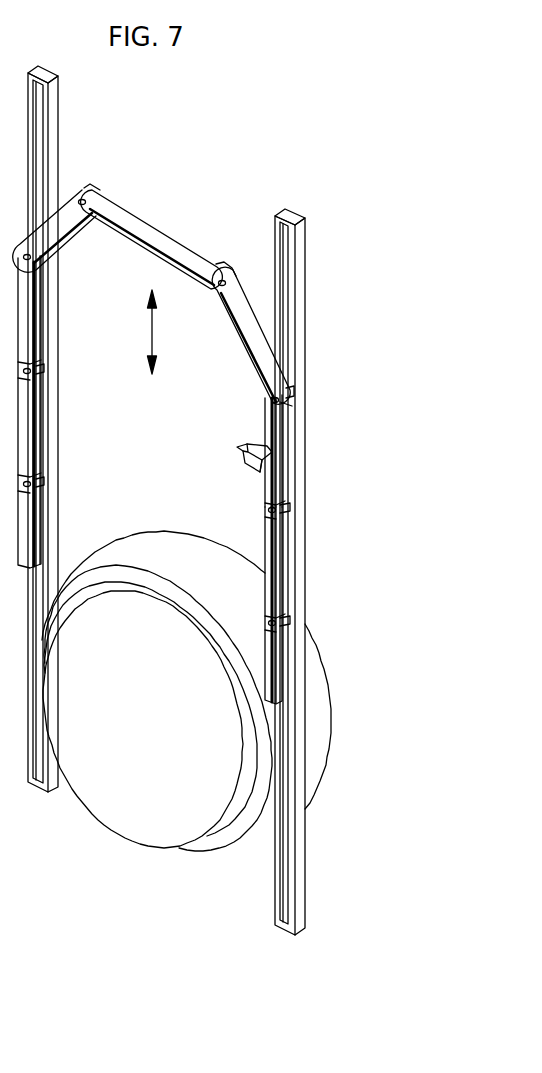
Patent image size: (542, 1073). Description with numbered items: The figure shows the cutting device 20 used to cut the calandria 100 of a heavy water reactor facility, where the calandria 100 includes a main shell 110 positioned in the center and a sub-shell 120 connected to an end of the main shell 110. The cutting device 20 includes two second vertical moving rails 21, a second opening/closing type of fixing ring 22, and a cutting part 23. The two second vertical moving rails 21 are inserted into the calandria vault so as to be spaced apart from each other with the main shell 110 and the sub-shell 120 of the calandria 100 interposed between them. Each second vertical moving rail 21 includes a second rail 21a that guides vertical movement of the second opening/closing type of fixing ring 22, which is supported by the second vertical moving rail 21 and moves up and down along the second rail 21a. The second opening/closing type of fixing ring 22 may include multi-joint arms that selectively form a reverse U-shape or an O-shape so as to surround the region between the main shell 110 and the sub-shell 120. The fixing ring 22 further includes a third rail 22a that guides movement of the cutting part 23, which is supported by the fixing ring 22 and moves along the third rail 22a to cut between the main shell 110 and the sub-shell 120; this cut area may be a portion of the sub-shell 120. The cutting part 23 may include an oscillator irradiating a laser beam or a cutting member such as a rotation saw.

The cutting device 20 is at (360, 265).
The second vertical moving rail 21 is at (305, 323).
The second rail 21a is at (287, 267).
The second opening/closing type of fixing ring 22 is at (282, 433).
The third rail 22a is at (270, 540).
The cutting part 23 is at (272, 458).
The calandria 100 is at (186, 685).
The main shell 110 is at (178, 535).
The sub-shell 120 is at (146, 847).